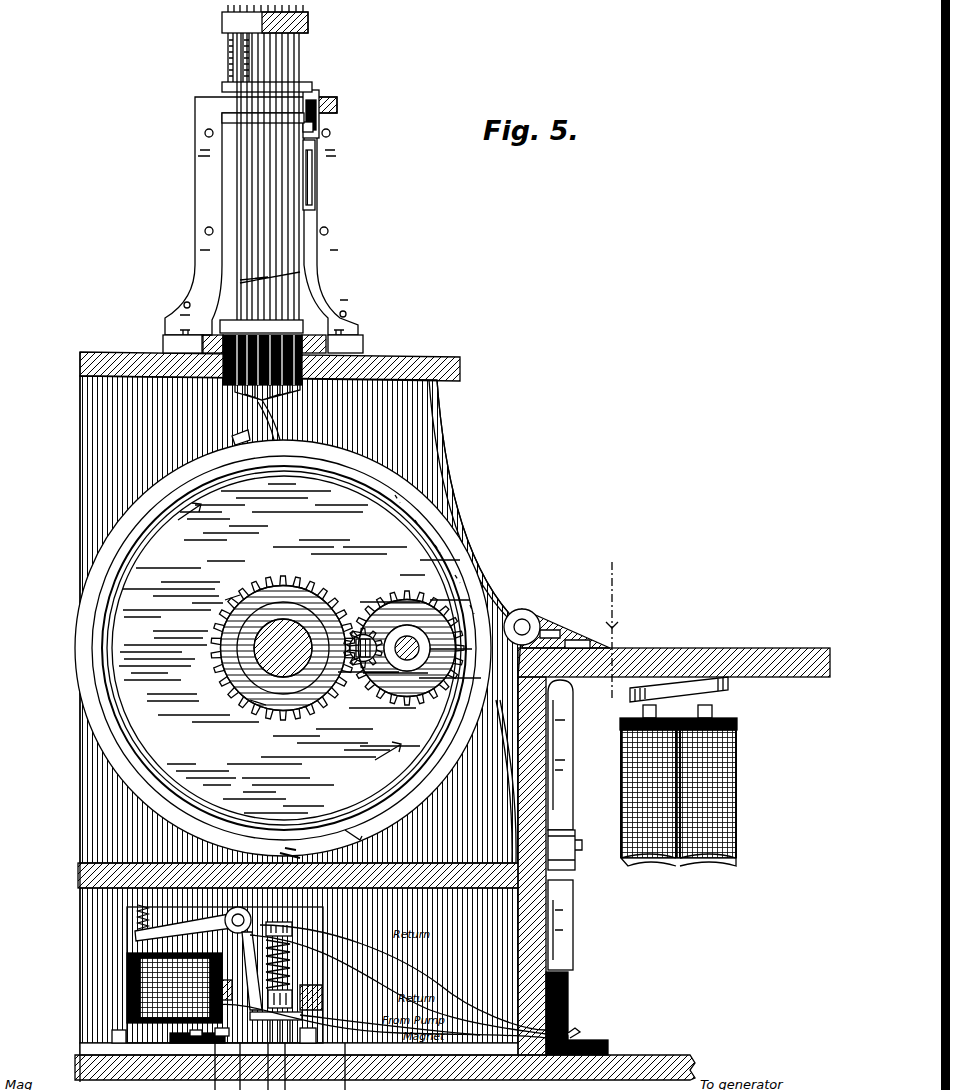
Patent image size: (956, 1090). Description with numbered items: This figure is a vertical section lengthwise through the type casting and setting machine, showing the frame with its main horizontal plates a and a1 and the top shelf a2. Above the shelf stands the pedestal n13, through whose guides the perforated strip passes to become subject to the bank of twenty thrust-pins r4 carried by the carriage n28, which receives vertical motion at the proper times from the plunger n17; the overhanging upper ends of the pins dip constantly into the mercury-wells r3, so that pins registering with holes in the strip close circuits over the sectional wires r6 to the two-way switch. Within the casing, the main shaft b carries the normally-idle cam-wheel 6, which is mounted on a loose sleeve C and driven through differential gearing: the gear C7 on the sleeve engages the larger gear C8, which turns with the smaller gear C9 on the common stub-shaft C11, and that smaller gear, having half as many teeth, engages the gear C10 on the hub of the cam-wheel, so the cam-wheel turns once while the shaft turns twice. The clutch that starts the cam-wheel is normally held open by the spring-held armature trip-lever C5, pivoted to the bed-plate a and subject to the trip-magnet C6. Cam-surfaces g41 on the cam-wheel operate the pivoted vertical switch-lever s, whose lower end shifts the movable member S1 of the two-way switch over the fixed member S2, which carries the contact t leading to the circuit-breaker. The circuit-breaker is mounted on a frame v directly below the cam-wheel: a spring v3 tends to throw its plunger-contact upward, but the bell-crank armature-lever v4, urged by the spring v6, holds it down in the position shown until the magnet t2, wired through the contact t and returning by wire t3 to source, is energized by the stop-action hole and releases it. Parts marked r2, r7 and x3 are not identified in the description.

The mercury-wells r3 is at (310, 22).
The thrust-pins r4 is at (240, 55).
The carriage n28 is at (312, 93).
The pedestal n13 is at (203, 218).
The plunger n17 is at (312, 218).
The sectional wires r6 is at (240, 281).
The top shelf a2 is at (430, 357).
The main horizontal plate a1 is at (688, 1060).
The bed-plate a is at (754, 652).
The cam-surfaces g41 is at (82, 600).
The cam-wheel 6 is at (112, 708).
The sleeve C is at (203, 647).
The main shaft b is at (228, 690).
The gear C7 is at (232, 603).
The gear C10 is at (258, 706).
The gear C9 is at (398, 625).
The gear C8 is at (402, 662).
The stub-shaft C11 is at (362, 668).
The stop r2 is at (290, 855).
The pawl r7 is at (350, 828).
The armature trip-lever C5 is at (535, 616).
The axis line x3 is at (604, 631).
The switch-lever s is at (562, 800).
The movable member of two-way switch S1 is at (572, 1005).
The contact t is at (575, 1032).
The fixed member of two-way switch S2 is at (610, 1047).
The trip-magnet C6 is at (738, 802).
The frame v is at (120, 985).
The armature-lever v4 is at (160, 930).
The spring v6 is at (134, 925).
The wire t3 is at (270, 925).
The spring v3 is at (290, 945).
The magnet t2 is at (132, 1002).